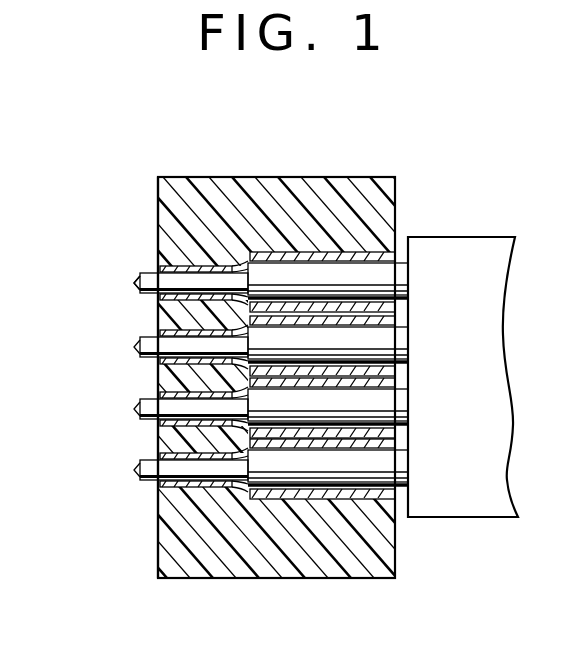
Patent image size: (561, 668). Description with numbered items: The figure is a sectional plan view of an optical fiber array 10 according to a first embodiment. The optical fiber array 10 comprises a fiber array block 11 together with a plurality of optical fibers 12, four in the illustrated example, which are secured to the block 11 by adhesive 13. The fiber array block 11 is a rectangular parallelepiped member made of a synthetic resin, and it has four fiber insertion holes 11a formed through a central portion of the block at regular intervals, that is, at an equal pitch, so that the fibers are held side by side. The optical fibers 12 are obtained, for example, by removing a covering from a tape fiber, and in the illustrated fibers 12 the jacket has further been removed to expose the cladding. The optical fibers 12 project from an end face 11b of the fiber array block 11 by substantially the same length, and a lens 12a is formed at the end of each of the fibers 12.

The optical fiber array 10 is at (293, 104).
The fiber array block 11 is at (280, 377).
The fiber insertion holes 11a is at (283, 498).
The end face 11b is at (158, 213).
The optical fibers 12 is at (146, 298).
The lens 12a is at (138, 284).
The adhesive 13 is at (294, 252).